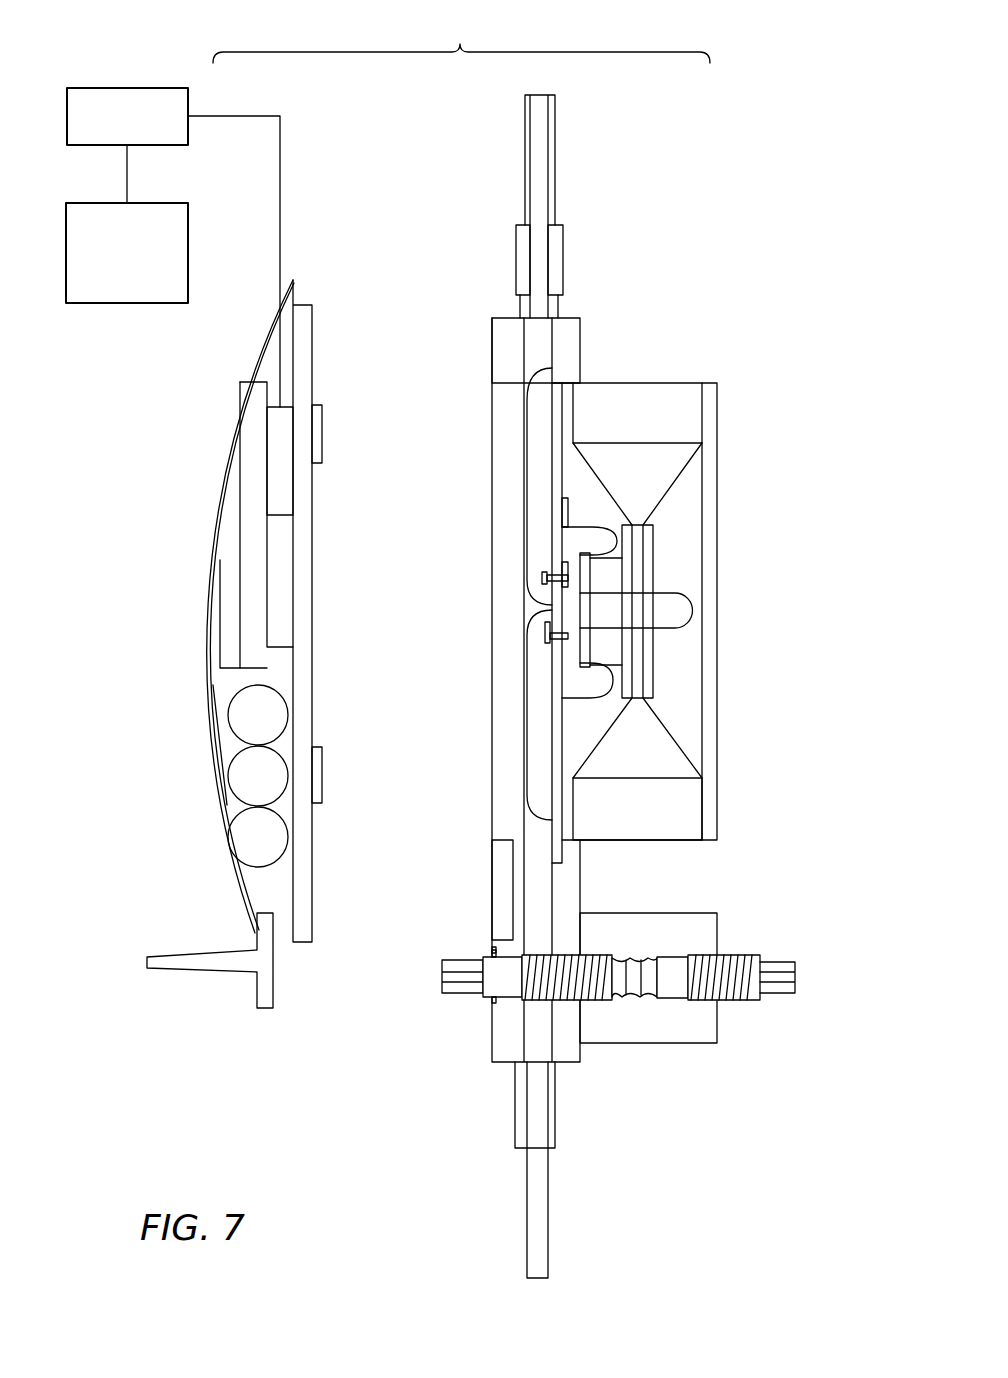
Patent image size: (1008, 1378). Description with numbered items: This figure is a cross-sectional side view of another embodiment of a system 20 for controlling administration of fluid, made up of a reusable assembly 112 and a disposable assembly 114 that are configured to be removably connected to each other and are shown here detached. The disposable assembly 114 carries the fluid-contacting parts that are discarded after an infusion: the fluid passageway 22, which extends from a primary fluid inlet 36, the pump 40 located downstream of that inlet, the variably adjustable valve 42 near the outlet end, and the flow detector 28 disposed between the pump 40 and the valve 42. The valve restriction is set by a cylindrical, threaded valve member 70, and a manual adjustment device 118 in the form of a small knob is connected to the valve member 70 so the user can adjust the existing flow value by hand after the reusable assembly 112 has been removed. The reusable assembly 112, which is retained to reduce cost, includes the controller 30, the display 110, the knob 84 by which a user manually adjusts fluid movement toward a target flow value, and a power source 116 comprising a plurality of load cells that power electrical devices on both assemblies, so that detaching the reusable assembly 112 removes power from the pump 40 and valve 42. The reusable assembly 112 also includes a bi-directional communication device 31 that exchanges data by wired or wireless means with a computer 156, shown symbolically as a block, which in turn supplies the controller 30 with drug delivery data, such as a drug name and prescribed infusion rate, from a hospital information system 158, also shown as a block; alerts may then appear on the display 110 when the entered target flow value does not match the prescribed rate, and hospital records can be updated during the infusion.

The system 20 is at (461, 37).
The fluid passageway 22 is at (553, 392).
The flow detector 28 is at (513, 872).
The controller 30 is at (293, 513).
The bi-directional communication device 31 is at (265, 432).
The primary fluid inlet 36 is at (540, 320).
The pump 40 is at (718, 355).
The variably adjustable valve 42 is at (800, 925).
The valve member 70 is at (680, 955).
The knob 84 is at (205, 990).
The display 110 is at (240, 585).
The reusable assembly 112 is at (234, 349).
The disposable assembly 114 is at (477, 241).
The power source 116 is at (228, 703).
The manual adjustment device 118 is at (463, 995).
The computer 156 is at (134, 88).
The hospital information system 158 is at (122, 310).